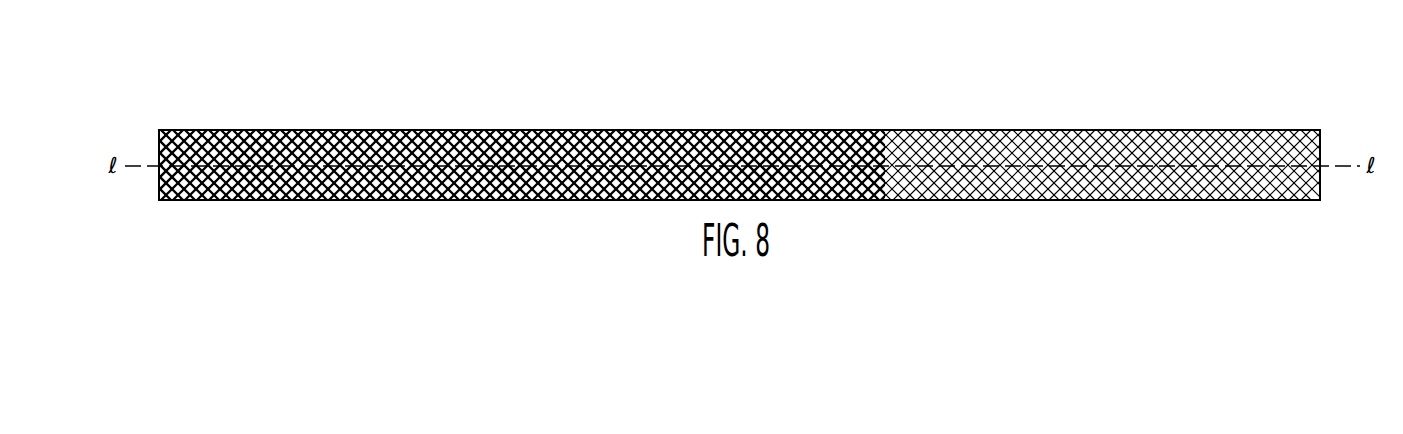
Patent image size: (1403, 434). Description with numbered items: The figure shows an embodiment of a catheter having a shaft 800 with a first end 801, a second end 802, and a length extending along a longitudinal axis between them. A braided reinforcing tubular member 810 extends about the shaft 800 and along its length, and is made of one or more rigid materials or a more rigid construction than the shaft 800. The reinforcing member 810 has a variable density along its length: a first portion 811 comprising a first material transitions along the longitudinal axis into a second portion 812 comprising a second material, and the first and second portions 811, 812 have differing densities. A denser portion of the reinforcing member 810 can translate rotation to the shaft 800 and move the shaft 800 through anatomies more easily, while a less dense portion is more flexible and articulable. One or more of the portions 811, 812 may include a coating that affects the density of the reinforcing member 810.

The shaft 800 is at (402, 157).
The first end 801 is at (159, 131).
The second end 802 is at (1320, 131).
The braided reinforcing tubular member 810 is at (823, 140).
The first portion 811 is at (602, 142).
The second portion 812 is at (990, 140).